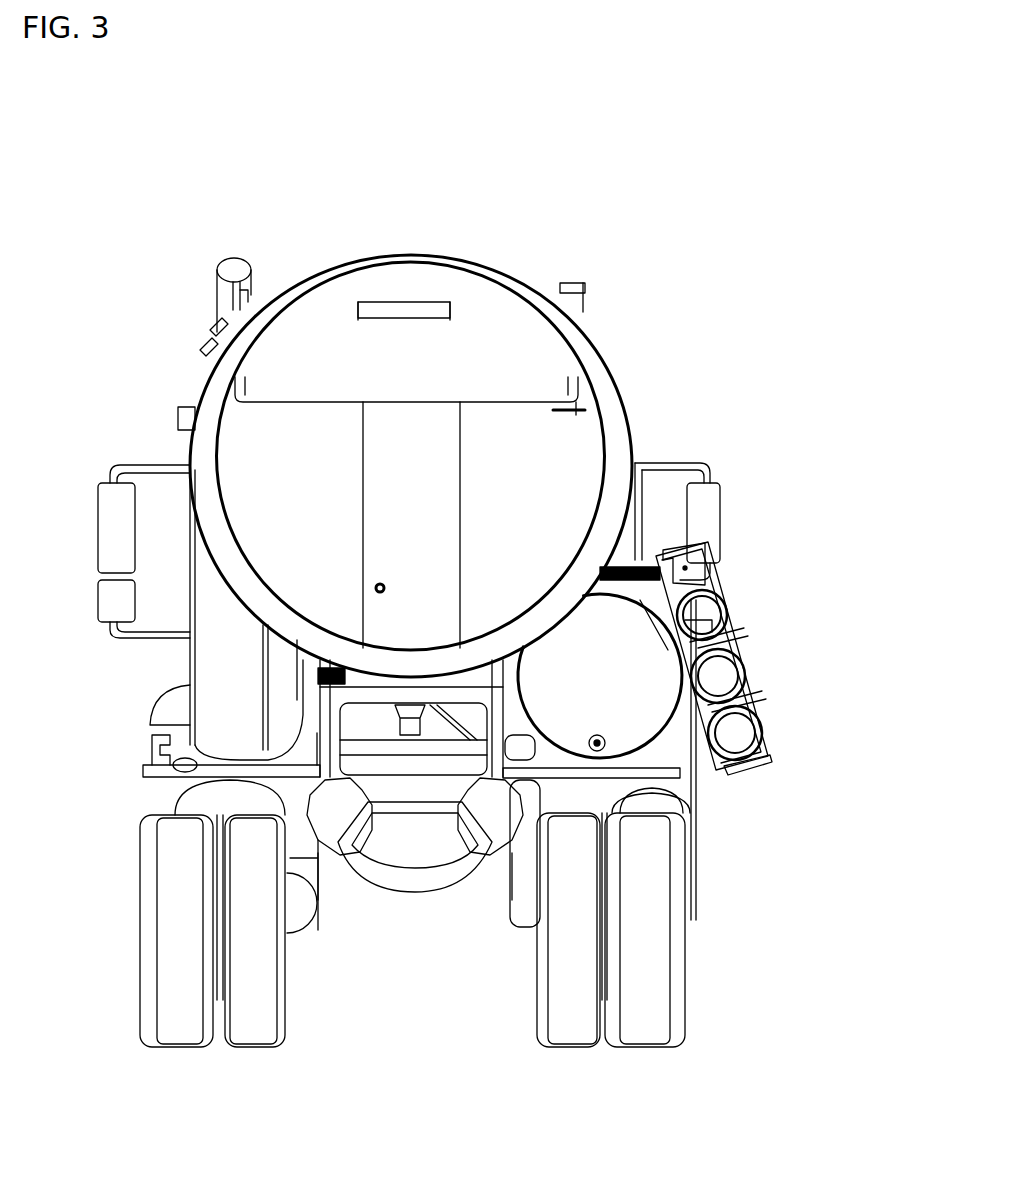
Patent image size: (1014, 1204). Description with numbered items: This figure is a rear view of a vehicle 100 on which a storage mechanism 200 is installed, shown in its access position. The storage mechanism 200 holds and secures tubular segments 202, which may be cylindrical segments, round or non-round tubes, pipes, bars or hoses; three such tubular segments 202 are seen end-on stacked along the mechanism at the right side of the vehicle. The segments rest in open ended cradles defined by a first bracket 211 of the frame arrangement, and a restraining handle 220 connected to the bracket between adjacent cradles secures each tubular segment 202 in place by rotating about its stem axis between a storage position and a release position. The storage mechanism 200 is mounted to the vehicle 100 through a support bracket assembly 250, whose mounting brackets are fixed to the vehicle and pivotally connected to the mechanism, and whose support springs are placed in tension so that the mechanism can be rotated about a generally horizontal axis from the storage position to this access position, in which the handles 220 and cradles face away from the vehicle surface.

The vehicle 100 is at (424, 183).
The support bracket assembly 250 is at (640, 515).
The storage mechanism 200 is at (762, 778).
The first bracket 211 is at (725, 773).
The tubular segment 202 is at (717, 593).
The restraining handle 220 is at (737, 640).